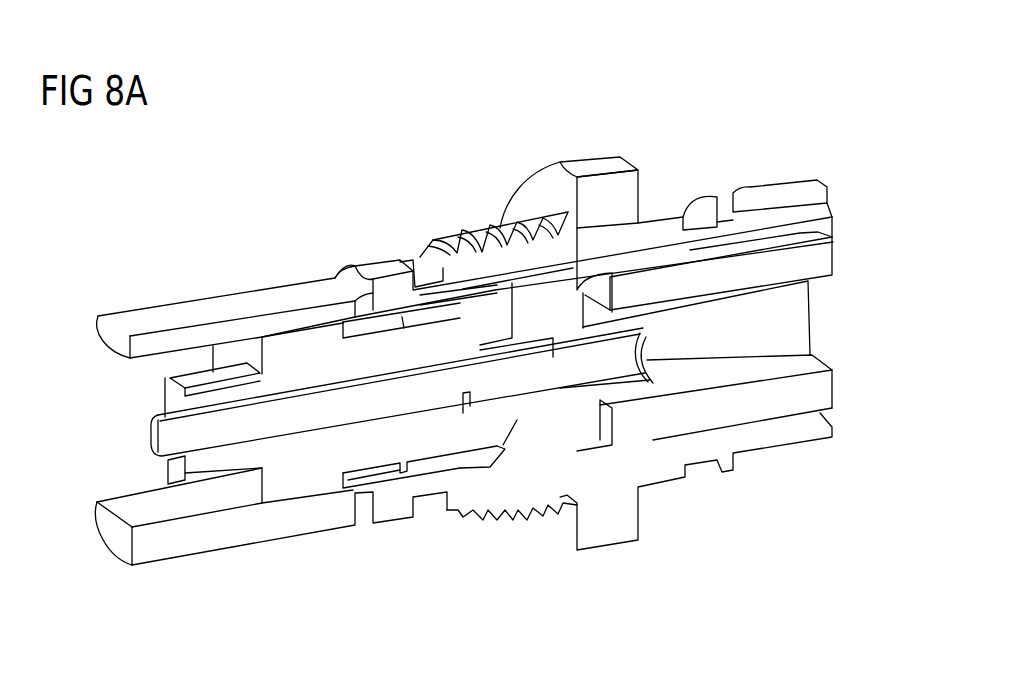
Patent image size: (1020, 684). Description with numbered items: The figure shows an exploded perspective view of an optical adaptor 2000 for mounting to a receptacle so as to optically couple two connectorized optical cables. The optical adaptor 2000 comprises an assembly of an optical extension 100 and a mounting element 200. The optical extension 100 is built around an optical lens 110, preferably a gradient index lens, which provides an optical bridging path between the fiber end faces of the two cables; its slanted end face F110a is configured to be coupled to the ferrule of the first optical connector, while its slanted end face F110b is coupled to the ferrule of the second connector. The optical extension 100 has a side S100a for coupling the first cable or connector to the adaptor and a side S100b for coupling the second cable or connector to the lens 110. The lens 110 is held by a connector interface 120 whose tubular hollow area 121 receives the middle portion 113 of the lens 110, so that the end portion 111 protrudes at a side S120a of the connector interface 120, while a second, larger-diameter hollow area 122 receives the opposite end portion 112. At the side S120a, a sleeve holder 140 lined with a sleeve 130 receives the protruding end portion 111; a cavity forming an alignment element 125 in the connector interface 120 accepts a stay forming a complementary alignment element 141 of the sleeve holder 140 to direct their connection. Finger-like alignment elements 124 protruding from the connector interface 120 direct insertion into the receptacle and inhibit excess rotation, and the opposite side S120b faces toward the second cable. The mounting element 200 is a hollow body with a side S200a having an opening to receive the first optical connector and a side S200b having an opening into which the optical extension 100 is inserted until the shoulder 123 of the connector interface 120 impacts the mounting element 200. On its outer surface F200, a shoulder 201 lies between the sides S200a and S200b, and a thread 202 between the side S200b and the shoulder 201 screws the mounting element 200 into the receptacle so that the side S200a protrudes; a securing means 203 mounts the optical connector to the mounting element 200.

The optical adaptor 2000 is at (548, 142).
The optical extension 100 is at (208, 283).
The optical lens 110 is at (318, 407).
The end portion of the lens 111 is at (530, 386).
The end portion of the lens 112 is at (170, 465).
The middle portion of the lens 113 is at (355, 405).
The connector interface 120 is at (237, 290).
The tubular hollow area 121 is at (322, 434).
The hollow area 122 is at (267, 449).
The shoulder 123 is at (337, 274).
The alignment element 124 is at (127, 317).
The alignment element 125 is at (372, 478).
The sleeve 130 is at (645, 342).
The sleeve holder 140 is at (533, 463).
The alignment element 141 is at (418, 472).
The mounting element 200 is at (698, 177).
The shoulder 201 is at (592, 164).
The thread 202 is at (450, 240).
The securing means 203 is at (768, 193).
The outer surface of the mounting element F200 is at (658, 213).
The side of the mounting element S200a is at (812, 288).
The side of the mounting element S200b is at (355, 277).
The side of the optical extension S100a is at (648, 372).
The side of the optical extension S100b is at (102, 448).
The side of the connector interface S120a is at (500, 338).
The side of the connector interface S120b is at (170, 388).
The end face of the lens F110a is at (578, 400).
The end face of the lens F110b is at (145, 427).